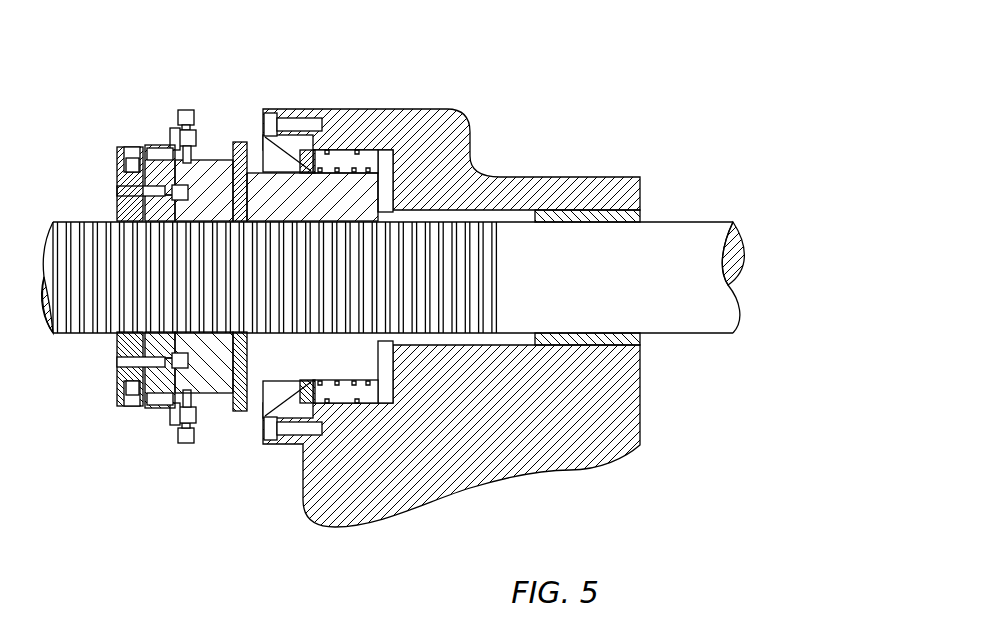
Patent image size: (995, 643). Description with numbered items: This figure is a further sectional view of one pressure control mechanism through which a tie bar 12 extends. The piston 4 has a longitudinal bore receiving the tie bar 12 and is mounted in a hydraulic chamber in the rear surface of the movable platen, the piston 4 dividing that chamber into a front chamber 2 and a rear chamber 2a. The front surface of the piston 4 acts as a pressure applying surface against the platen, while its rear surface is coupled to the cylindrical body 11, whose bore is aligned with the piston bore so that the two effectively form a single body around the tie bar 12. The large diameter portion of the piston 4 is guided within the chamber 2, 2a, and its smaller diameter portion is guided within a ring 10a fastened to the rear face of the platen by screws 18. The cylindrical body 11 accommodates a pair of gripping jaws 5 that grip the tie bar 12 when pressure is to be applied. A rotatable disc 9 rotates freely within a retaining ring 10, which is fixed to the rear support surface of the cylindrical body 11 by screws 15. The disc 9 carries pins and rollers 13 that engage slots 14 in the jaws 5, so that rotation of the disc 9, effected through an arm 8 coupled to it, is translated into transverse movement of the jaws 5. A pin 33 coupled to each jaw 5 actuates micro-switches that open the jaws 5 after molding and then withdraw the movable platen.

The front chamber 2 is at (392, 167).
The rear chamber 2a is at (323, 158).
The piston 4 is at (368, 187).
The gripping jaws 5 is at (212, 158).
The arm 8 is at (135, 155).
The rotatable disc 9 is at (147, 345).
The retaining ring 10 is at (165, 402).
The ring 10a is at (260, 405).
The cylindrical body 11 is at (240, 142).
The tie bar 12 is at (700, 247).
The pins and rollers 13 is at (178, 190).
The slots 14 is at (177, 362).
The screws 15 is at (138, 398).
The screws 18 is at (287, 432).
The pin 33 is at (185, 108).